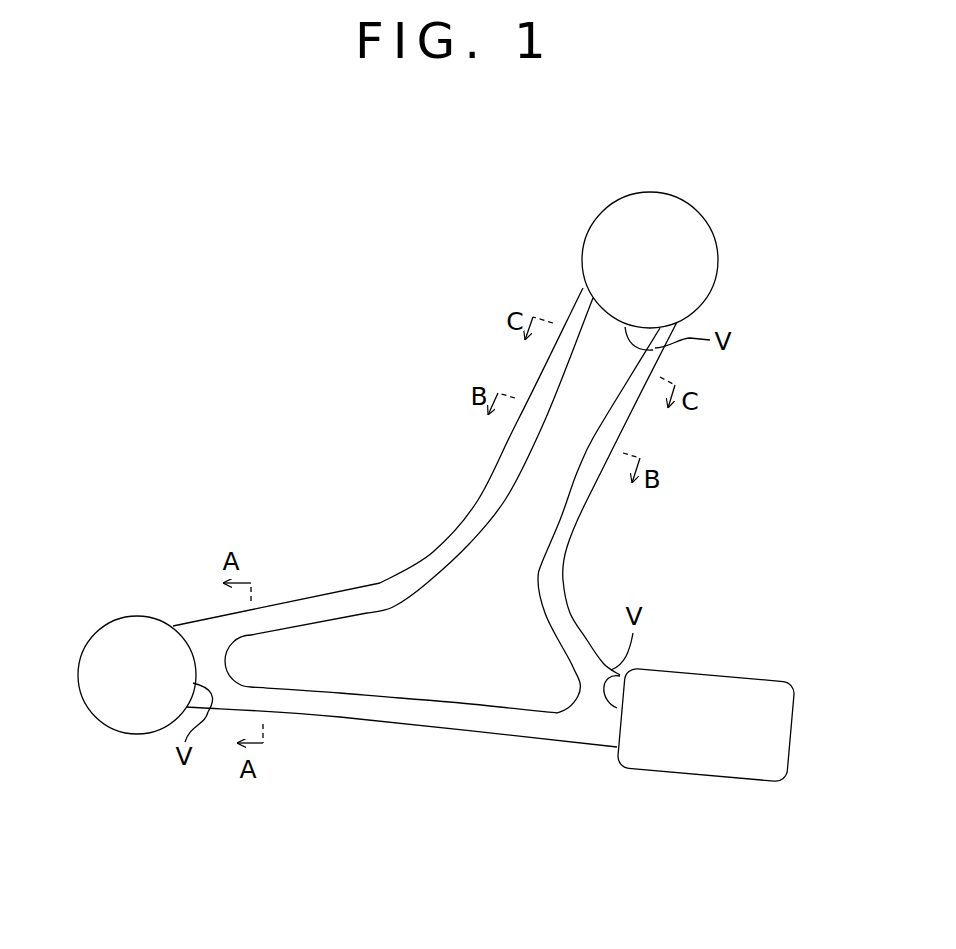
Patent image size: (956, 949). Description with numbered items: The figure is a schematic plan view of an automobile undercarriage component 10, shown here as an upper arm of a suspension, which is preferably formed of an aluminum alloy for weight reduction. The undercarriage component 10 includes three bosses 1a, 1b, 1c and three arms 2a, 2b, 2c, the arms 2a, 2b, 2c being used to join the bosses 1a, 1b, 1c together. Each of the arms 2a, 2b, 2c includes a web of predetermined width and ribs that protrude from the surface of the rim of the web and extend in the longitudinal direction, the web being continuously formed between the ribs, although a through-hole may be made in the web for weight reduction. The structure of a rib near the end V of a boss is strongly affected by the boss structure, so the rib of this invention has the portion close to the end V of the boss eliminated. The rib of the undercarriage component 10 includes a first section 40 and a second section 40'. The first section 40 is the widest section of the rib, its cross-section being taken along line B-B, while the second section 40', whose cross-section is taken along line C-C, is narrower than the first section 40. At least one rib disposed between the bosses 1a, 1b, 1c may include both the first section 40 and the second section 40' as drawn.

The automobile undercarriage component 10 is at (397, 216).
The boss 1a is at (100, 614).
The boss 1b is at (712, 206).
The boss 1c is at (725, 660).
The arm 2a is at (290, 735).
The arm 2b is at (520, 368).
The arm 2c is at (567, 754).
The first section 40 is at (596, 520).
The second section 40' is at (654, 498).